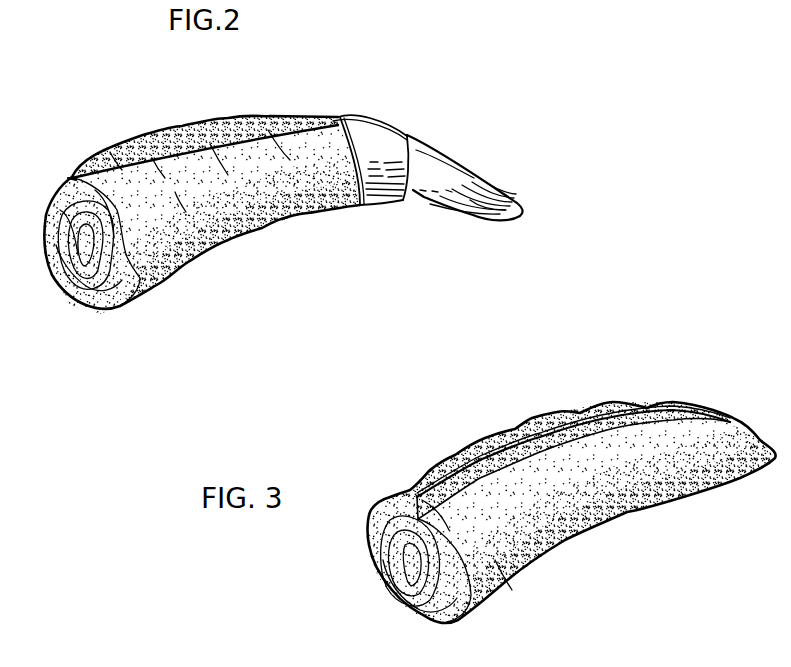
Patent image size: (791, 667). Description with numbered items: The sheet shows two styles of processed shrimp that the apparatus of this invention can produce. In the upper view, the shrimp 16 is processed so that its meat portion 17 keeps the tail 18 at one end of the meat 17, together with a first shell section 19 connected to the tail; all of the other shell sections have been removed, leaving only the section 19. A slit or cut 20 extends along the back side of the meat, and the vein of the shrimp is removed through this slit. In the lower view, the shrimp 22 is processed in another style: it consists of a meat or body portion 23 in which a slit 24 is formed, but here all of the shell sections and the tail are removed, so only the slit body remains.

In FIG. 2, the shrimp 16 is at (462, 148).
In FIG. 2, the meat portion 17 is at (88, 268).
In FIG. 2, the tail 18 is at (481, 203).
In FIG. 2, the first shell section 19 is at (360, 205).
In FIG. 2, the slit 20 is at (64, 186).
In FIG. 3, the shrimp 22 is at (638, 389).
In FIG. 3, the meat or body portion 23 is at (503, 537).
In FIG. 3, the slit 24 is at (391, 496).